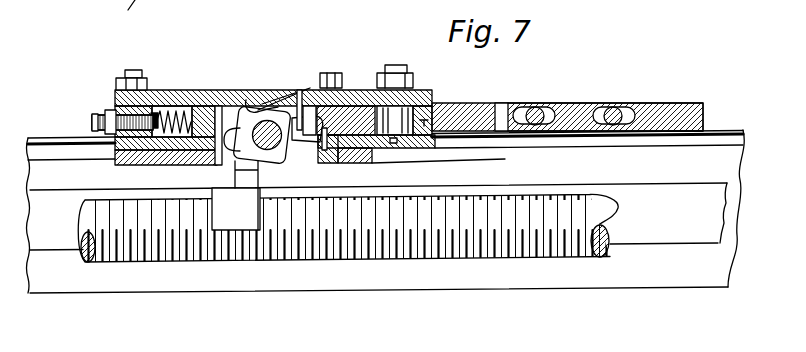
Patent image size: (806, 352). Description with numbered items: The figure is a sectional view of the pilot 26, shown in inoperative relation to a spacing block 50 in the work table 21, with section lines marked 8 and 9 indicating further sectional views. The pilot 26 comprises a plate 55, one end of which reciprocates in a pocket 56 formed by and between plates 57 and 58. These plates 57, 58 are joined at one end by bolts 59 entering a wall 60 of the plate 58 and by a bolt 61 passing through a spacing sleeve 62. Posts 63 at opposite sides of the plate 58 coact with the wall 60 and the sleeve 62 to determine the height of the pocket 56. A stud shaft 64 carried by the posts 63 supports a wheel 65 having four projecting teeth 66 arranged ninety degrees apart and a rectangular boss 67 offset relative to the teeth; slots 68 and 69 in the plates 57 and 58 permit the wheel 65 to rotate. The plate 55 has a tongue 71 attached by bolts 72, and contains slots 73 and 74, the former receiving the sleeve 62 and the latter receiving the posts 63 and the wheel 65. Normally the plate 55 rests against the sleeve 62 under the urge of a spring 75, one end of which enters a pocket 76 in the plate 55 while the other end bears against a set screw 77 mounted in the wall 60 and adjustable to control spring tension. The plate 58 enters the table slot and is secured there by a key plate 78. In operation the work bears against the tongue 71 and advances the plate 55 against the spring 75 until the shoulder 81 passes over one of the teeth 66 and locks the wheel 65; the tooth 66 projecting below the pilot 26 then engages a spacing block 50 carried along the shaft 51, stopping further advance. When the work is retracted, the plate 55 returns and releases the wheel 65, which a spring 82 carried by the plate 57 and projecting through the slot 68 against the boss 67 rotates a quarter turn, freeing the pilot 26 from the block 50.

The section line 8- 8 is at (719, 118).
The section line 9- 9 is at (270, 83).
The work table 21 is at (732, 212).
The pilot 26 is at (157, 68).
The spacing blocks 50 is at (233, 223).
The shaft 51 is at (597, 216).
The plate 55 is at (381, 72).
The pocket 56 is at (139, 158).
The plate 57 is at (437, 101).
The plate 58 is at (336, 152).
The bolts 59 is at (128, 70).
The wall 60 is at (109, 109).
The bolt 61 is at (404, 66).
The spacing sleeve 62 is at (404, 128).
The posts 63 is at (308, 106).
The stud shaft 64 is at (257, 172).
The wheel 65 is at (268, 142).
The teeth 66 is at (206, 150).
The rectangular boss 67 is at (299, 90).
The slot 68 is at (252, 100).
The slot 69 is at (221, 150).
The tongue 71 is at (577, 103).
The bolts 72 is at (536, 120).
The slot 73 is at (428, 118).
The slot 74 is at (321, 155).
The spring 75 is at (167, 112).
The pocket 76 is at (208, 133).
The set screw 77 is at (100, 115).
The key plate 78 is at (391, 144).
The shoulder 81 is at (366, 113).
The spring 82 is at (285, 105).